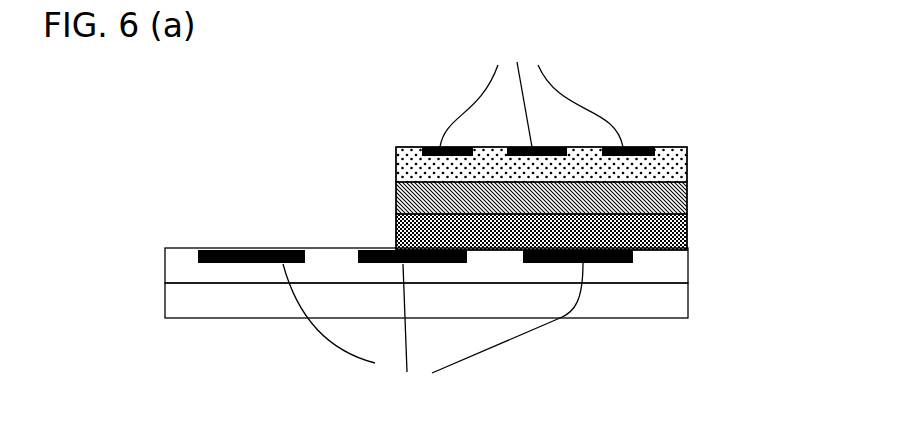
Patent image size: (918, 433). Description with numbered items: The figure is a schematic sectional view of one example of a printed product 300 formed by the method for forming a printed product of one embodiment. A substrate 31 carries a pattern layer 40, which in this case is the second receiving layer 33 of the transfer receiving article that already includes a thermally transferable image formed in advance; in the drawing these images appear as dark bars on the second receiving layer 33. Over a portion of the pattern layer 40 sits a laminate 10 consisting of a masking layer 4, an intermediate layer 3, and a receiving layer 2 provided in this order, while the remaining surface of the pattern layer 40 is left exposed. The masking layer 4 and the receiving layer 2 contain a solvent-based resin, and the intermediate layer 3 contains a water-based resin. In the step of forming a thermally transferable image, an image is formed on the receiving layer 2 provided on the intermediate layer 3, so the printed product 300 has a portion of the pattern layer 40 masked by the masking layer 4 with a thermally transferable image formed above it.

The printed product 300 is at (727, 63).
The thermal transfer sheet / laminate 10 is at (747, 137).
The receiving layer 2 is at (657, 163).
The intermediate layer 3 is at (657, 198).
The masking layer 4 is at (657, 233).
The second receiving layer 33 is at (655, 271).
The pattern layer 40 is at (426, 265).
The substrate 31 is at (658, 303).